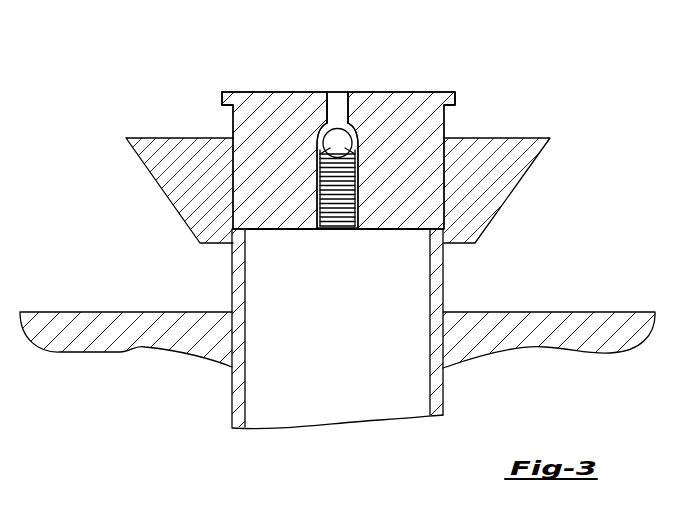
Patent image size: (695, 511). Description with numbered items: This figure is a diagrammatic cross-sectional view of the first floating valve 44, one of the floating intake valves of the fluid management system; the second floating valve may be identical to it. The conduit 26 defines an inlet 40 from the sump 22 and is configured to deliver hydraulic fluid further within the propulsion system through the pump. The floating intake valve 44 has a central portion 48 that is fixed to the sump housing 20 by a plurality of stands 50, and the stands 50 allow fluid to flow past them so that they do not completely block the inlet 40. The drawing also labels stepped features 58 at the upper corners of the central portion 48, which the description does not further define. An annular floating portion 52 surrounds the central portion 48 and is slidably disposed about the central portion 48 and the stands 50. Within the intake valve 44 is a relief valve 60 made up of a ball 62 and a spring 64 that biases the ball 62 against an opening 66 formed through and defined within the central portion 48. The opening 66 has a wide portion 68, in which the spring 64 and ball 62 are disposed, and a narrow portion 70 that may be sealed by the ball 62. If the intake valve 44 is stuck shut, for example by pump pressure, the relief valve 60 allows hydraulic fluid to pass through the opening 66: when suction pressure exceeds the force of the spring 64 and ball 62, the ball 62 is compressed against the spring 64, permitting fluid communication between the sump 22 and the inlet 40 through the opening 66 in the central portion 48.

The sump housing 20 is at (85, 330).
The sump 22 is at (80, 287).
The conduit 26 is at (386, 386).
The inlet 40 is at (268, 359).
The first floating valve 44 is at (233, 64).
The central portion 48 is at (412, 120).
The stands 50 is at (232, 281).
The annular floating portion 52 is at (180, 192).
The shoulder steps 58 is at (222, 98).
The relief valve 60 is at (325, 85).
The ball 62 is at (339, 142).
The spring 64 is at (318, 166).
The opening 66 is at (343, 106).
The wide portion 68 is at (362, 167).
The narrow portion 70 is at (348, 105).